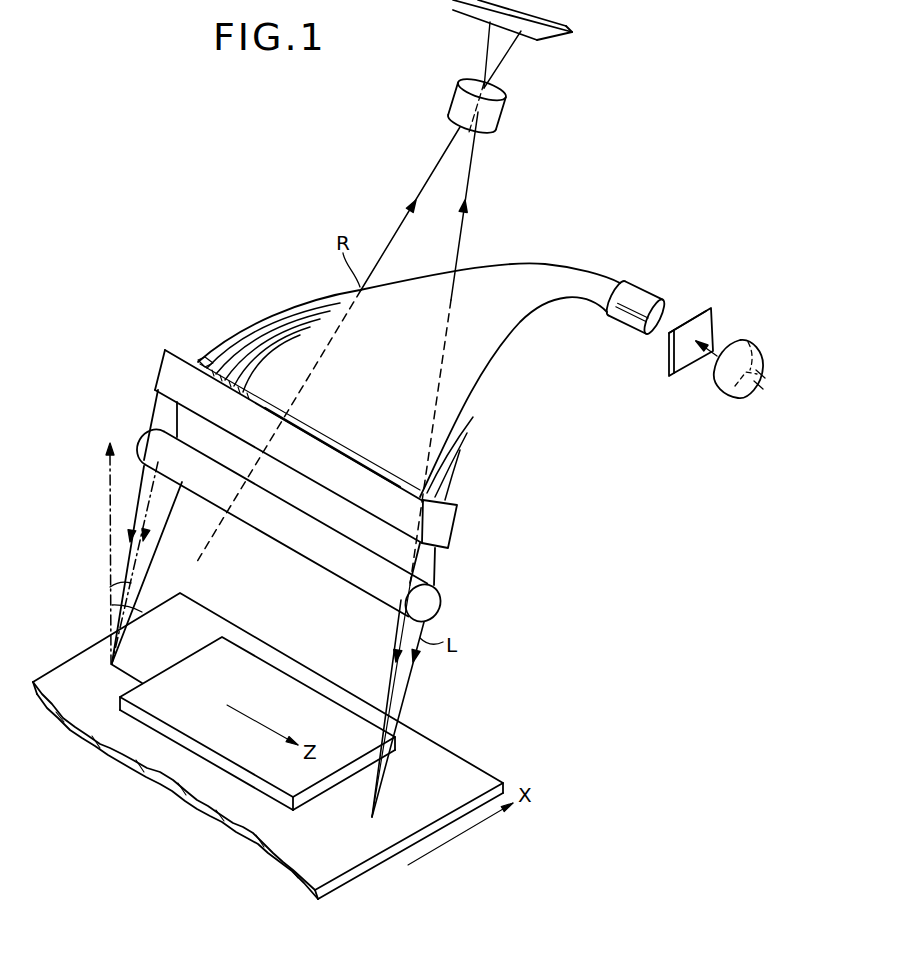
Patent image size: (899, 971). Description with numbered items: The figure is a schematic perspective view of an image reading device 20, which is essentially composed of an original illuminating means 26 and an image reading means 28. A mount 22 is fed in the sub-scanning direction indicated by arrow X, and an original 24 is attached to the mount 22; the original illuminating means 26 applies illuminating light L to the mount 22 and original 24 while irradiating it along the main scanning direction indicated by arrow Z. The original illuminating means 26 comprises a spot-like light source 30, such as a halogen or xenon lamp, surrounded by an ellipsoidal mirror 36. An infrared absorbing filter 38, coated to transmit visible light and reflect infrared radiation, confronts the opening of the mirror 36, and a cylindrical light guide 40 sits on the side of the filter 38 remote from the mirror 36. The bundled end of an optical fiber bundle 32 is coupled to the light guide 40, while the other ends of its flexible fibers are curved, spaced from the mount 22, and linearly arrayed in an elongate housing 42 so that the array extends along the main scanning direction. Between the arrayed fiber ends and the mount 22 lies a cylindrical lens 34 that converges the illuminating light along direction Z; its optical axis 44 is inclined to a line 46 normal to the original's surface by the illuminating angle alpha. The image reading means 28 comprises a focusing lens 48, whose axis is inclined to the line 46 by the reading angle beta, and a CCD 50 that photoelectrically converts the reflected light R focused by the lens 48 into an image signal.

The image reading device 20 is at (237, 267).
The mount 22 is at (442, 757).
The original 24 is at (202, 738).
The original illuminating means 26 is at (647, 280).
The image reading means 28 is at (436, 112).
The spot-like light source 30 is at (767, 367).
The optical fiber bundle 32 is at (535, 277).
The cylindrical lens 34 is at (428, 612).
The ellipsoidal mirror 36 is at (737, 400).
The infrared absorbing filter 38 is at (710, 323).
The cylindrical light guide 40 is at (630, 303).
The elongate housing 42 is at (447, 530).
The optical axis 44 is at (127, 577).
The line normal to the surface of the original 46 is at (110, 542).
The focusing lens 48 is at (493, 118).
The CCD 50 is at (563, 38).